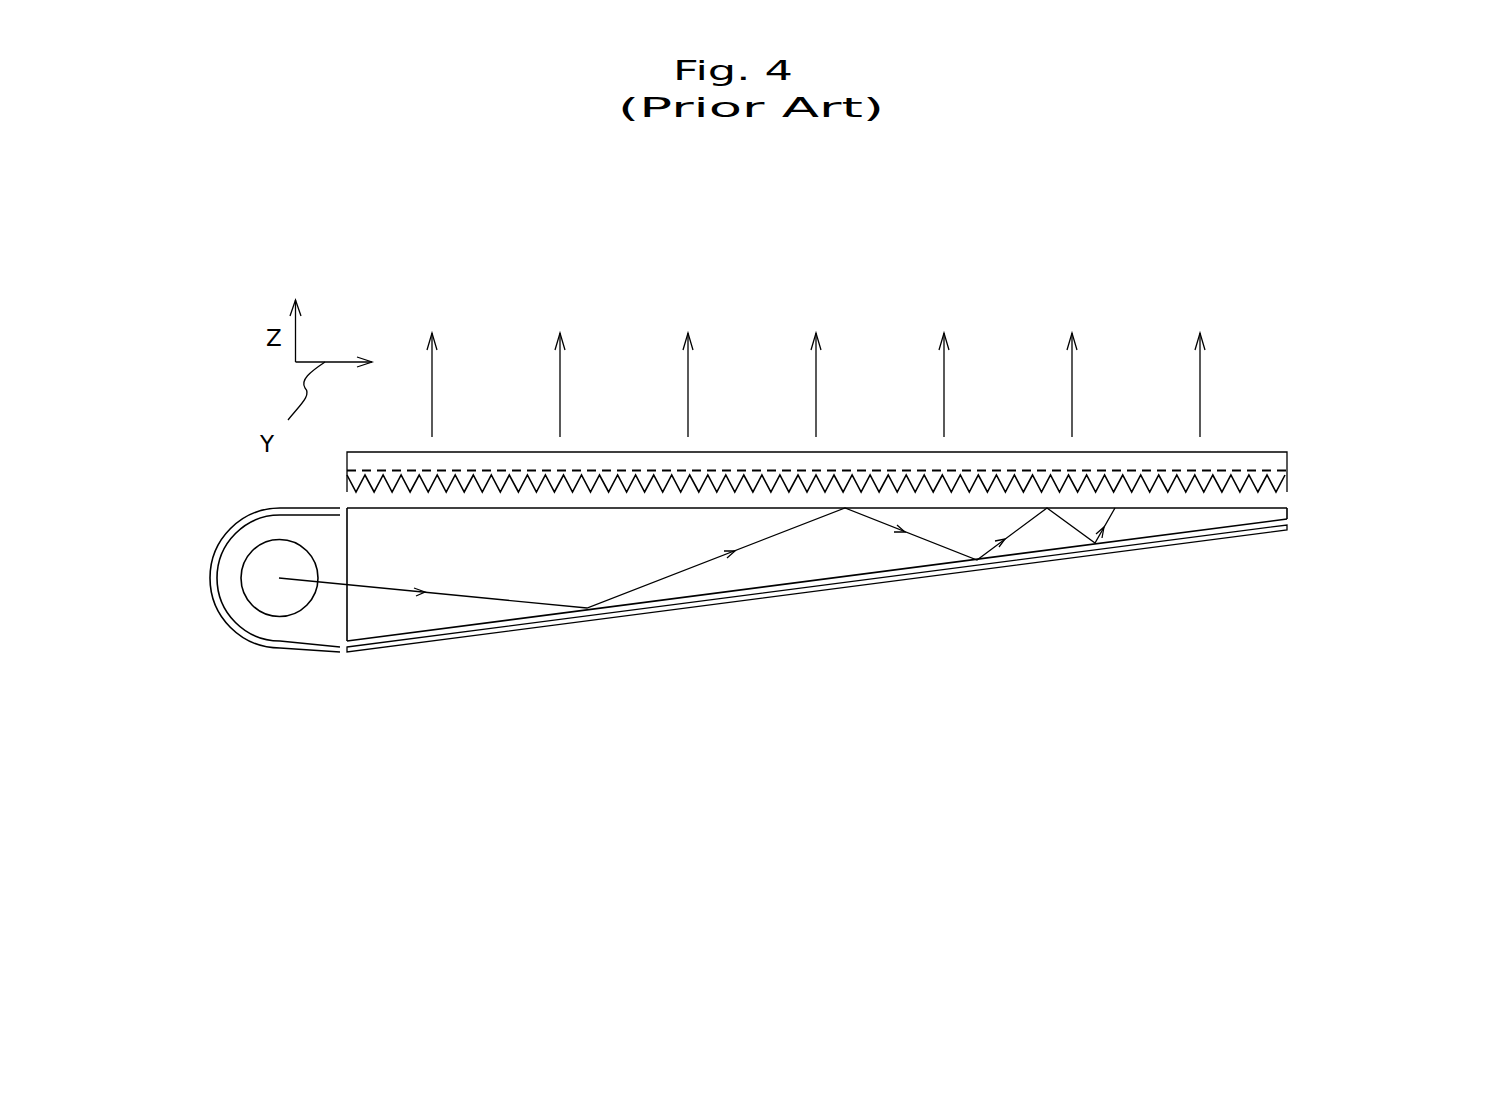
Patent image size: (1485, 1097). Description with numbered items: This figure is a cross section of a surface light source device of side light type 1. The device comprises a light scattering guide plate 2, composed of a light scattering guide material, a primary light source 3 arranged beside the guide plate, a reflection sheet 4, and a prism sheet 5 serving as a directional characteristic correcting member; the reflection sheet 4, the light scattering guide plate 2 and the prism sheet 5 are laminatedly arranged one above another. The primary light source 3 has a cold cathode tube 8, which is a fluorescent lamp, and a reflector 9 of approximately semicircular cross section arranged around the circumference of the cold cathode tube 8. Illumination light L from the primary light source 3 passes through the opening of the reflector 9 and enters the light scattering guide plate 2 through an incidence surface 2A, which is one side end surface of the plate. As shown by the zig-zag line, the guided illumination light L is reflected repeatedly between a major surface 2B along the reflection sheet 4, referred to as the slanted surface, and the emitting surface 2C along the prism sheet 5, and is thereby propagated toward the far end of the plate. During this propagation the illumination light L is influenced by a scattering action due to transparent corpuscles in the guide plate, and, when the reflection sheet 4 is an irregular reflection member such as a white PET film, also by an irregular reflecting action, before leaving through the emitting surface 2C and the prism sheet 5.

The surface light source device of side light type 1 is at (816, 610).
The light scattering guide plate 2 is at (817, 543).
The incidence surface 2A is at (347, 574).
The major surface along the reflection sheet (slanted surface) 2B is at (600, 607).
The emitting surface 2C is at (595, 508).
The primary light source 3 is at (245, 576).
The reflection sheet 4 is at (885, 583).
The prism sheet 5 is at (1277, 470).
The cold cathode tube 8 is at (290, 605).
The reflector 9 is at (223, 625).
The illumination light L is at (487, 600).